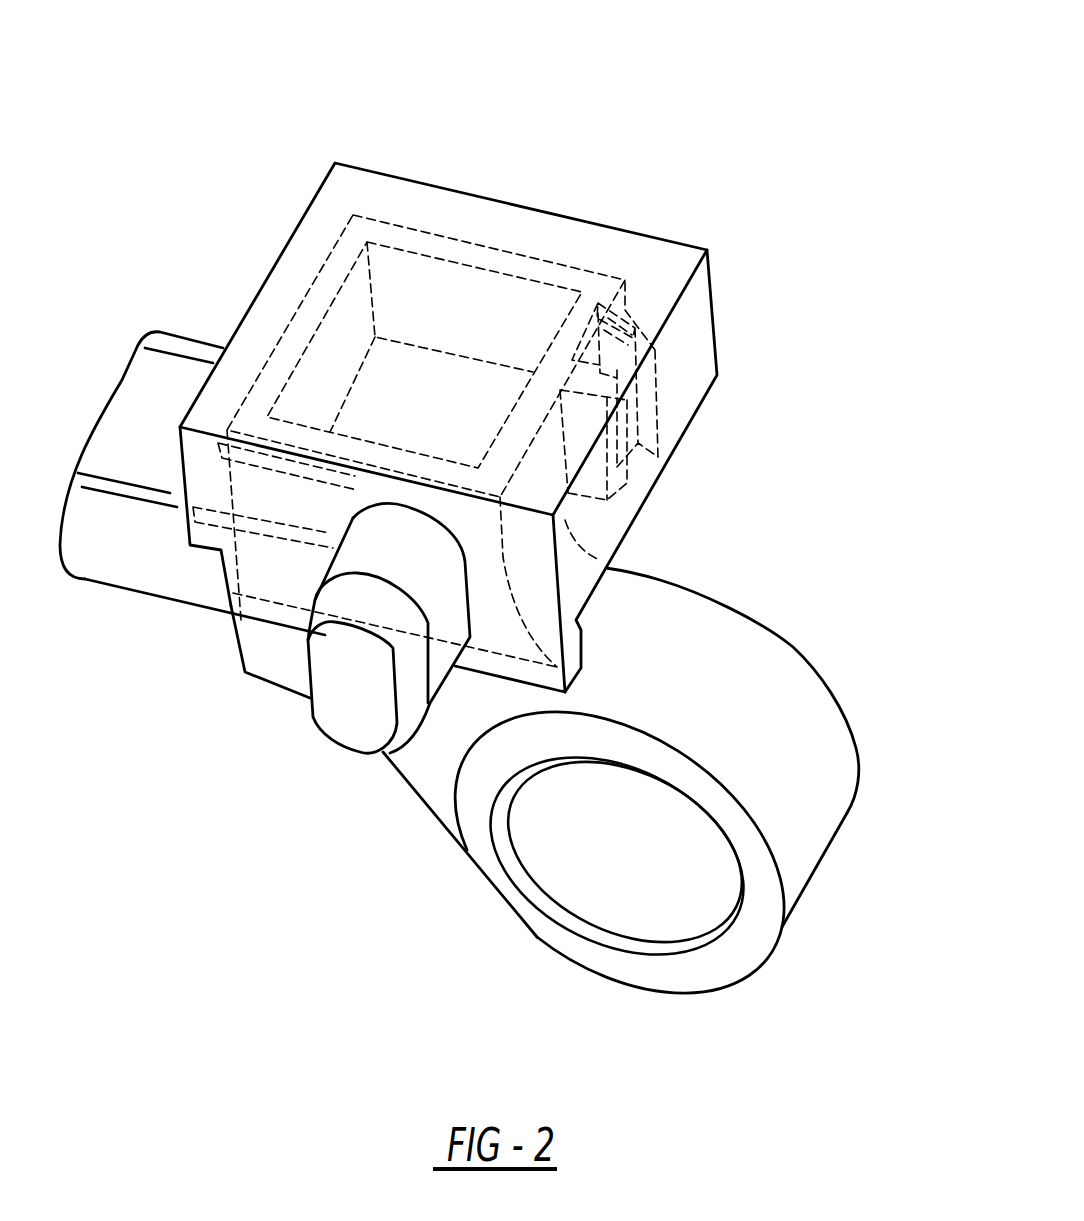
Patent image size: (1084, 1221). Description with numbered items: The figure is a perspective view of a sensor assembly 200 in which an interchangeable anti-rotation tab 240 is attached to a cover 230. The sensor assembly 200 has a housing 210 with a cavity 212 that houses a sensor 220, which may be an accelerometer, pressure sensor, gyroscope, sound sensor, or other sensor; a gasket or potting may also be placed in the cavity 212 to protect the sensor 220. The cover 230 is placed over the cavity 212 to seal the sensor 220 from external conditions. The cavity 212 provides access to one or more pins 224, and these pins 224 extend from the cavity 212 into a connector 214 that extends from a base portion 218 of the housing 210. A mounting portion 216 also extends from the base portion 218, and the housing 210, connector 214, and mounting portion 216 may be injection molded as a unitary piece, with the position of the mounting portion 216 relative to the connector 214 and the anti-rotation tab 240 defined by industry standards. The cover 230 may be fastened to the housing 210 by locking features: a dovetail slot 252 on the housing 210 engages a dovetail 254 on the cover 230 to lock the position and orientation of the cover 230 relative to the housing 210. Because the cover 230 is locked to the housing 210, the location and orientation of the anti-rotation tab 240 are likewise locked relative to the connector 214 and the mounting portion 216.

The sensor assembly 200 is at (785, 203).
The housing 210 is at (393, 235).
The cavity 212 is at (503, 318).
The connector 214 is at (137, 393).
The mounting portion 216 is at (623, 887).
The base portion 218 is at (278, 657).
The sensor 220 is at (440, 372).
The pins 224 is at (213, 525).
The cover 230 is at (658, 265).
The anti-rotation tab 240 is at (345, 713).
The dovetail slot 252 is at (636, 324).
The dovetail 254 is at (610, 343).